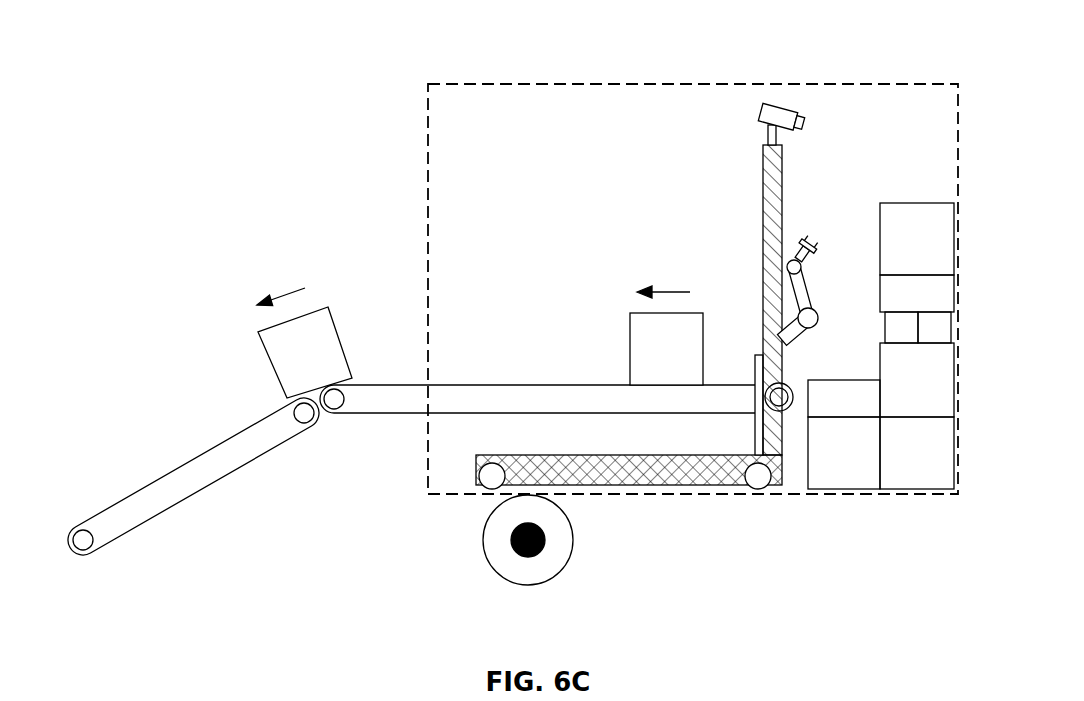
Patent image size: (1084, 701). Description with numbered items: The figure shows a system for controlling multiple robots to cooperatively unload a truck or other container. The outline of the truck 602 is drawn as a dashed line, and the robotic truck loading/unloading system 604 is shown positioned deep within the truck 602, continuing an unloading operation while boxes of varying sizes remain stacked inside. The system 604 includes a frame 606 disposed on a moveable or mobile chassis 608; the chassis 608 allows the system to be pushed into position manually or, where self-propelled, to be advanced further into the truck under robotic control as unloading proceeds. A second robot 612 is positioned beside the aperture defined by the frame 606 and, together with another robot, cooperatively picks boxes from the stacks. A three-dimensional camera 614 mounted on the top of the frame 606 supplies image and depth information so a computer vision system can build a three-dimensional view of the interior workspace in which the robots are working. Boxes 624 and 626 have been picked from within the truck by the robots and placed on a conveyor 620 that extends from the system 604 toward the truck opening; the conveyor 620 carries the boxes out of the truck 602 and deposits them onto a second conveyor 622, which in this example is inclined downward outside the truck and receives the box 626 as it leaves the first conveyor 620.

The truck 602 is at (428, 137).
The robotic truck loading/unloading system 604 is at (674, 186).
The frame 606 is at (782, 180).
The chassis 608 is at (655, 478).
The second robot 612 is at (809, 298).
The 3D camera 614 is at (800, 112).
The conveyor 620 is at (548, 383).
The conveyor 622 is at (225, 475).
The box 624 is at (630, 328).
The box 626 is at (272, 366).